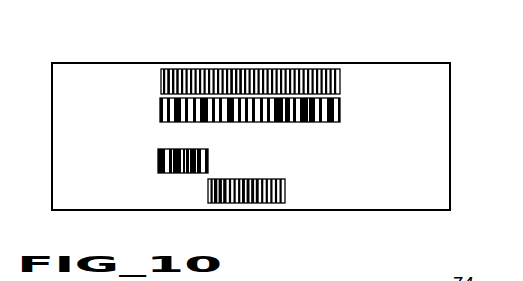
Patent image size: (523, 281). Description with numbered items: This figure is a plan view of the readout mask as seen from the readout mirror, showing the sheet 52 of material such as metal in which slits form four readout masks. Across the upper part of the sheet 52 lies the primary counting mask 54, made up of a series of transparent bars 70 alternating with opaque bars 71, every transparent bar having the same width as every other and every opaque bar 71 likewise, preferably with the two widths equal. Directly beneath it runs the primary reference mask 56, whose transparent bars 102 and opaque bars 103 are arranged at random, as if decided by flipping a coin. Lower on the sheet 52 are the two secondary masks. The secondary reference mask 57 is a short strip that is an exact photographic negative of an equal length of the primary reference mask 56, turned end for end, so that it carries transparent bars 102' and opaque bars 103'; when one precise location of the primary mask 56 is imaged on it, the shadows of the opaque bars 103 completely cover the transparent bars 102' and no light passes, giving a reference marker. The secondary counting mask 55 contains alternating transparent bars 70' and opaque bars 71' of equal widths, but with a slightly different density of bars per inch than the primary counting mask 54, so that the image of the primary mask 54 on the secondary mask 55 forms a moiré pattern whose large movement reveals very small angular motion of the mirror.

The sheet 52 is at (443, 94).
The primary counting mask 54 is at (270, 60).
The primary reference mask 56 is at (278, 124).
The transparent bars 70 is at (180, 54).
The opaque bars 71 is at (245, 54).
The opaque bars 103 is at (266, 130).
The transparent bars 102 is at (324, 130).
The secondary reference mask 57 is at (185, 167).
The opaque bars 103' is at (144, 146).
The transparent bars 102' is at (167, 182).
The secondary counting mask 55 is at (267, 216).
The transparent bars 70' is at (213, 222).
The opaque bars 71' is at (259, 222).